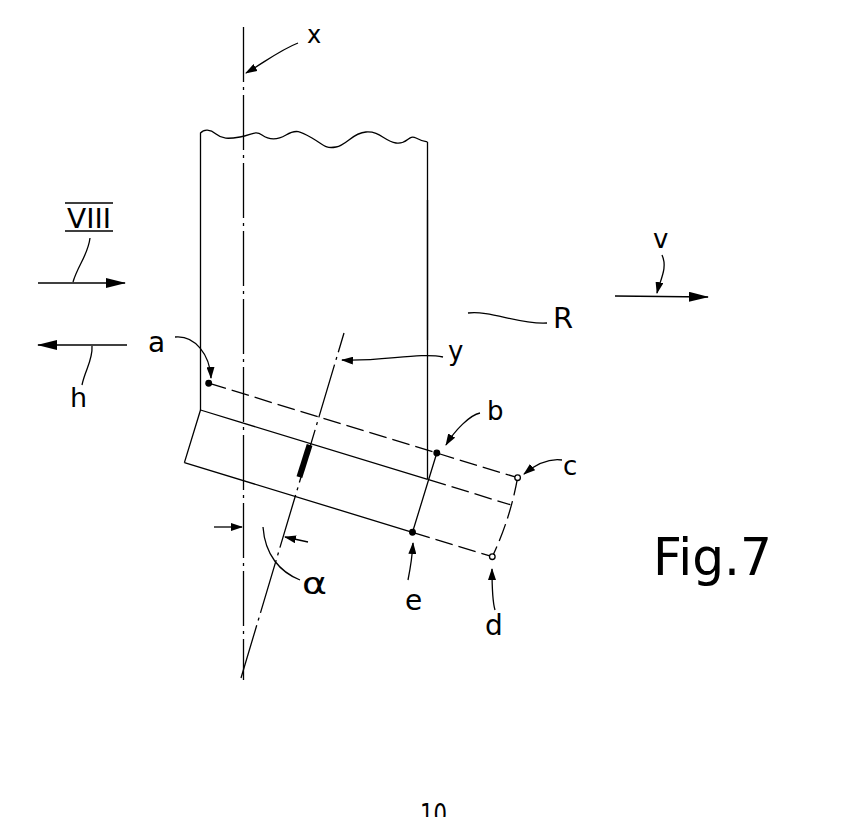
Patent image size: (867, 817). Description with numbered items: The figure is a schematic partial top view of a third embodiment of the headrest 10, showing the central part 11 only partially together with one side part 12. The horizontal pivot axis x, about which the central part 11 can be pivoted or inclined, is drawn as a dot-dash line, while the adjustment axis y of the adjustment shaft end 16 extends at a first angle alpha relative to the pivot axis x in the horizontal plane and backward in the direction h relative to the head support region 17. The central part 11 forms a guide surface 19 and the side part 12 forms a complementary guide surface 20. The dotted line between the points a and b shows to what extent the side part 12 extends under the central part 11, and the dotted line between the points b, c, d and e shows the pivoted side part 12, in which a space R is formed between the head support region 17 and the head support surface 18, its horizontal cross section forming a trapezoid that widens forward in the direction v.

The headrest 10 is at (407, 123).
The central part 11 is at (432, 199).
The side part 12 is at (207, 477).
The adjustment shaft end 16 is at (315, 462).
The head support region 17 is at (430, 268).
The head support surface 18 is at (482, 466).
The guide surface 19 is at (219, 424).
The complementary guide surface 20 is at (282, 431).